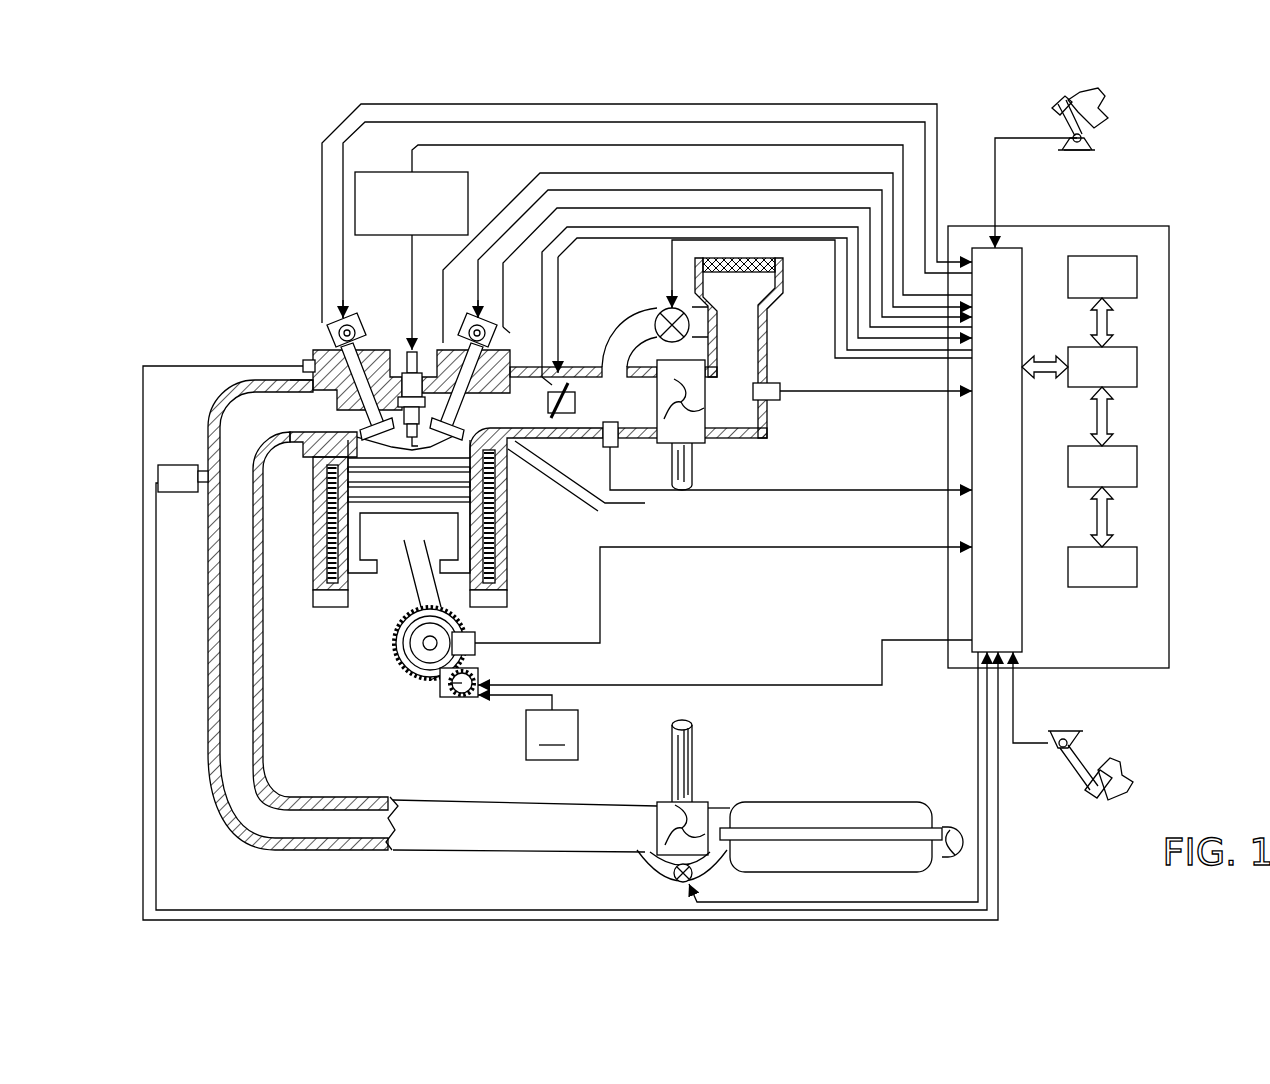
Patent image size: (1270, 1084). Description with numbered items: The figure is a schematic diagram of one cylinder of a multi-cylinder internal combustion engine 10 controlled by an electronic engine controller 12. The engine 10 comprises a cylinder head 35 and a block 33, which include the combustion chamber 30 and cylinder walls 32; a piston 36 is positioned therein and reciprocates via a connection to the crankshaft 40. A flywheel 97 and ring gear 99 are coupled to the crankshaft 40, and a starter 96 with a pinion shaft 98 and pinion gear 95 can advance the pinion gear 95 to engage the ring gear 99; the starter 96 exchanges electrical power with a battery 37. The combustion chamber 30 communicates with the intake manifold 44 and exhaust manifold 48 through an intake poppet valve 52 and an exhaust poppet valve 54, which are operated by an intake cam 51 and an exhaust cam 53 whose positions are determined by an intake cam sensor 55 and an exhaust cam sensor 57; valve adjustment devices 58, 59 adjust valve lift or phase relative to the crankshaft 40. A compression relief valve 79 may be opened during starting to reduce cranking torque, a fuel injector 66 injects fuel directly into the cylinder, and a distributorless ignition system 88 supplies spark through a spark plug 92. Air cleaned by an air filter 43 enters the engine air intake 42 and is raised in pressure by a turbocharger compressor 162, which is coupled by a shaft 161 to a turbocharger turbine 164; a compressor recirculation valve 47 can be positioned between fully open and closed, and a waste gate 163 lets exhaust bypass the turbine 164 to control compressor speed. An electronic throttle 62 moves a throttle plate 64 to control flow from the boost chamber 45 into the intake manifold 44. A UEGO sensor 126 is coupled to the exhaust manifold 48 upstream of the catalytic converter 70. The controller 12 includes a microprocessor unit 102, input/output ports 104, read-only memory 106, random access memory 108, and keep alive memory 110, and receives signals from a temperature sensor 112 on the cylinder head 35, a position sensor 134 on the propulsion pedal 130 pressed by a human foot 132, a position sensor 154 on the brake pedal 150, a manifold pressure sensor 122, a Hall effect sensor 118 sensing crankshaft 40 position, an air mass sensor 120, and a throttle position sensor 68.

The internal combustion engine 10 is at (252, 303).
The electronic engine controller 12 is at (1165, 226).
The combustion chamber 30 is at (405, 452).
The cylinder walls 32 is at (350, 592).
The block 33 is at (311, 486).
The cylinder head 35 is at (307, 349).
The piston 36 is at (392, 543).
The battery 37 is at (528, 727).
The crankshaft 40 is at (425, 672).
The engine air intake 42 is at (620, 282).
The air filter 43 is at (745, 272).
The intake manifold 44 is at (512, 415).
The boost chamber 45 is at (605, 415).
The compressor recirculation valve 47 is at (665, 312).
The exhaust manifold 48 is at (270, 422).
The intake cam 51 is at (472, 313).
The intake poppet valve 52 is at (463, 418).
The exhaust cam 53 is at (355, 315).
The exhaust poppet valve 54 is at (355, 424).
The intake cam sensor 55 is at (485, 342).
The exhaust cam sensor 57 is at (330, 338).
The valve adjustment device 58 is at (362, 343).
The valve adjustment device 59 is at (492, 322).
The electronic throttle 62 is at (565, 404).
The throttle plate 64 is at (555, 416).
The fuel injector 66 is at (548, 476).
The throttle position sensor 68 is at (542, 378).
The catalytic converter 70 is at (765, 802).
The compression relief valve 79 is at (416, 357).
The distributorless ignition system 88 is at (373, 172).
The spark plug 92 is at (403, 377).
The pinion gear 95 is at (468, 703).
The starter 96 is at (477, 700).
The flywheel 97 is at (405, 648).
The pinion shaft 98 is at (455, 702).
The ring gear 99 is at (440, 680).
The microprocessor unit 102 is at (1140, 365).
The input/output ports 104 is at (1022, 245).
The read-only memory 106 is at (1140, 270).
The random access memory 108 is at (1140, 462).
The keep alive memory 110 is at (1140, 562).
The temperature sensor 112 is at (302, 363).
The Hall effect sensor 118 is at (476, 640).
The air mass sensor 120 is at (780, 385).
The pressure sensor 122 is at (608, 447).
The Universal Exhaust Gas Oxygen (UEGO) sensor 126 is at (178, 466).
The propulsion pedal 130 is at (1062, 115).
The human foot 132 is at (1120, 108).
The position sensor 134 is at (1095, 140).
The brake pedal 150 is at (1088, 785).
The position sensor 154 is at (1052, 740).
The shaft 161 is at (672, 466).
The turbocharger compressor 162 is at (698, 437).
The waste gate 163 is at (682, 880).
The turbocharger turbine 164 is at (660, 802).